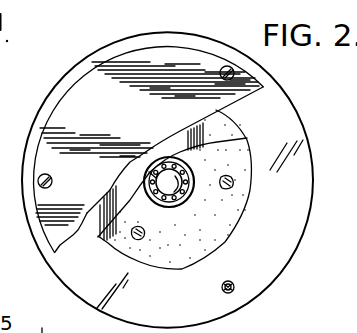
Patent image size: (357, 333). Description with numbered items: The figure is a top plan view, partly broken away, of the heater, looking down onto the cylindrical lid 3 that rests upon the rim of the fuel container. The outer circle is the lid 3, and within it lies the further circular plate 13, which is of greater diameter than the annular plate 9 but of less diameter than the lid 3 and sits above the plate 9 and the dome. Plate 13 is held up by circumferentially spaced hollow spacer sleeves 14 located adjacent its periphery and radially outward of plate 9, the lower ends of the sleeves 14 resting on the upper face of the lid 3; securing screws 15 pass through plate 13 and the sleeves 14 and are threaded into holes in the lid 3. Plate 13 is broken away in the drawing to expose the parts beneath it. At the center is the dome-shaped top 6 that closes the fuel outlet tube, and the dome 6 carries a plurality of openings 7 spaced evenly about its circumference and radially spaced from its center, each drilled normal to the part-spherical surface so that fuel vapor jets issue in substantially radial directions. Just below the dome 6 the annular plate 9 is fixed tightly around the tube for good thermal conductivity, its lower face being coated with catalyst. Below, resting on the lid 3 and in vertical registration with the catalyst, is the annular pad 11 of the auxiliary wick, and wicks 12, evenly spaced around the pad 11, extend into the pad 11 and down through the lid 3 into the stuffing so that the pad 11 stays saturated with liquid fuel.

The cylindrical lid 3 is at (295, 207).
The circular plate 13 is at (67, 109).
The securing screws 15 is at (38, 181).
The annular plate 9 is at (103, 236).
The openings 7 is at (155, 176).
The dome-shaped top 6 is at (193, 168).
The annular pad 11 is at (186, 248).
The wicks 12 is at (133, 241).
The hollow spacer sleeves 14 is at (223, 294).